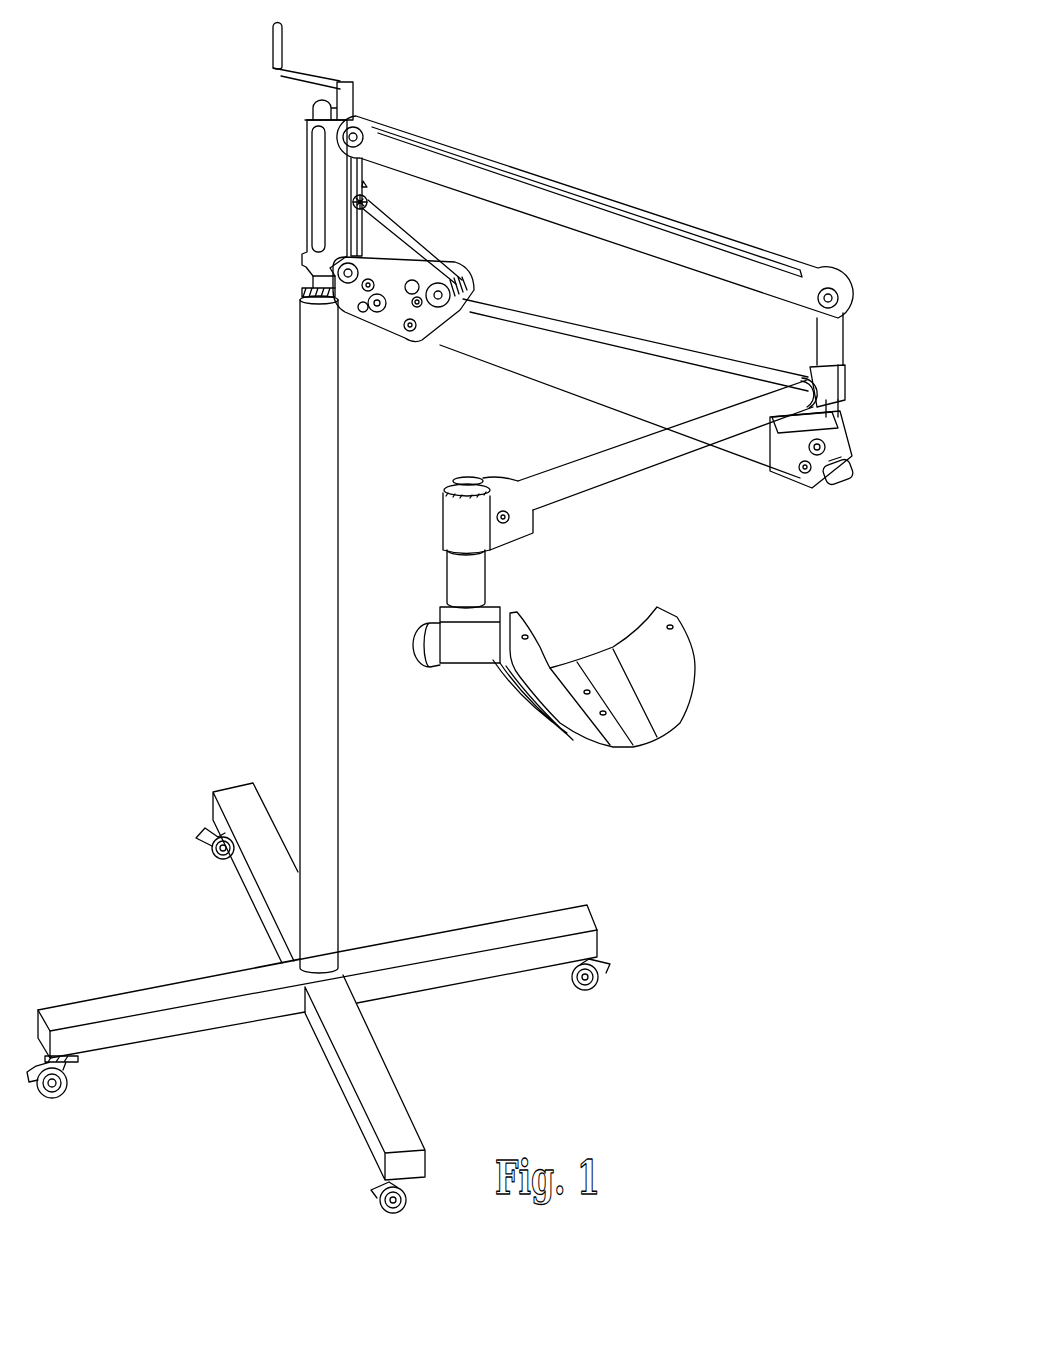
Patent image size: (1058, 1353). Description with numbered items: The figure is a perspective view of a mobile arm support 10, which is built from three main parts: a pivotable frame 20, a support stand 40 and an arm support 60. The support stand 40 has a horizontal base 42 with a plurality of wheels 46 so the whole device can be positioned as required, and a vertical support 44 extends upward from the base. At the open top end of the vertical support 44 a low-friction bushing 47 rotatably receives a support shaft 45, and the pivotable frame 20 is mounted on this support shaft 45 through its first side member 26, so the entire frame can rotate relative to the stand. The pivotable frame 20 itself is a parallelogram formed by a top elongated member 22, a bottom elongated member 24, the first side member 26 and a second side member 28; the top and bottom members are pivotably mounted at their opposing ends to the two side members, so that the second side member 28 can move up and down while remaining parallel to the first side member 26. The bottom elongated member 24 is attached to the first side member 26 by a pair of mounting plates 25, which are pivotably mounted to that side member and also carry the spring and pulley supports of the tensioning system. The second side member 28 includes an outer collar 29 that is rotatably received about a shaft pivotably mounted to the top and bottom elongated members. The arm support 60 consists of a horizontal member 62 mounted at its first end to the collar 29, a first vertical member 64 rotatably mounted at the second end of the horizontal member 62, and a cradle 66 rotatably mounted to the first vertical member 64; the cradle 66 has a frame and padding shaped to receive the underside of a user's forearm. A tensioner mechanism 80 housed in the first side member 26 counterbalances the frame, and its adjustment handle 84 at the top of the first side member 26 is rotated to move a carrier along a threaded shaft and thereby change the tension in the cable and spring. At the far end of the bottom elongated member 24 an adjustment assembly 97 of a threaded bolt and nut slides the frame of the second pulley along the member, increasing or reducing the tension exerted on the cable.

The mobile arm support 10 is at (140, 250).
The pivotable frame 20 is at (475, 389).
The top elongated member 22 is at (604, 207).
The bottom elongated member 24 is at (623, 350).
The mounting plates 25 is at (385, 328).
The first side member 26 is at (324, 200).
The second side member 28 is at (858, 420).
The outer collar 29 is at (848, 341).
The support stand 40 is at (203, 652).
The horizontal base 42 is at (209, 975).
The vertical support 44 is at (298, 590).
The support shaft 45 is at (316, 218).
The wheels 46 is at (72, 1084).
The bushing 47 is at (303, 300).
The arm support 60 is at (744, 565).
The horizontal member 62 is at (657, 466).
The first vertical member 64 is at (489, 578).
The cradle 66 is at (695, 695).
The tensioner mechanism 80 is at (407, 233).
The adjustment handle 84 is at (283, 47).
The adjustment assembly 97 is at (847, 494).